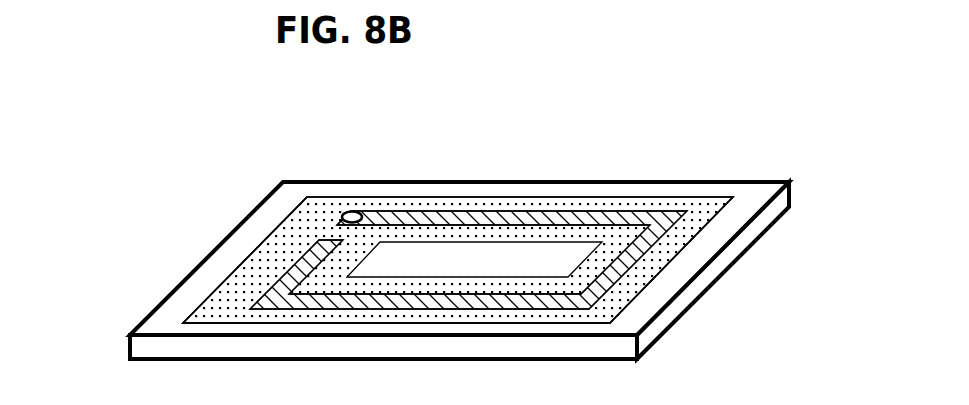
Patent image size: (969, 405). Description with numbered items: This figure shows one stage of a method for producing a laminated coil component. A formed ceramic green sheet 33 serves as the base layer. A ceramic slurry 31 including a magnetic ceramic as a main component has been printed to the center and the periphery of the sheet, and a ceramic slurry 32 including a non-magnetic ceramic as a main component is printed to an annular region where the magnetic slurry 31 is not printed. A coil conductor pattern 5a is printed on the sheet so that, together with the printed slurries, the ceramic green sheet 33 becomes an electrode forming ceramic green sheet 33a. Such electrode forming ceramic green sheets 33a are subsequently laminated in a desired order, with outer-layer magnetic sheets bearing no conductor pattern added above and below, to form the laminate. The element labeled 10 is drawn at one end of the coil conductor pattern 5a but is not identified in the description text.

The ceramic green sheet 33 is at (408, 180).
The electrode forming ceramic green sheet 33a is at (643, 160).
The ceramic slurry including a magnetic ceramic as a main component 31 is at (583, 250).
The ceramic slurry including a non-magnetic ceramic as a main component 32 is at (618, 303).
The coil conductor pattern 5a is at (500, 216).
The feed point 10 is at (344, 216).